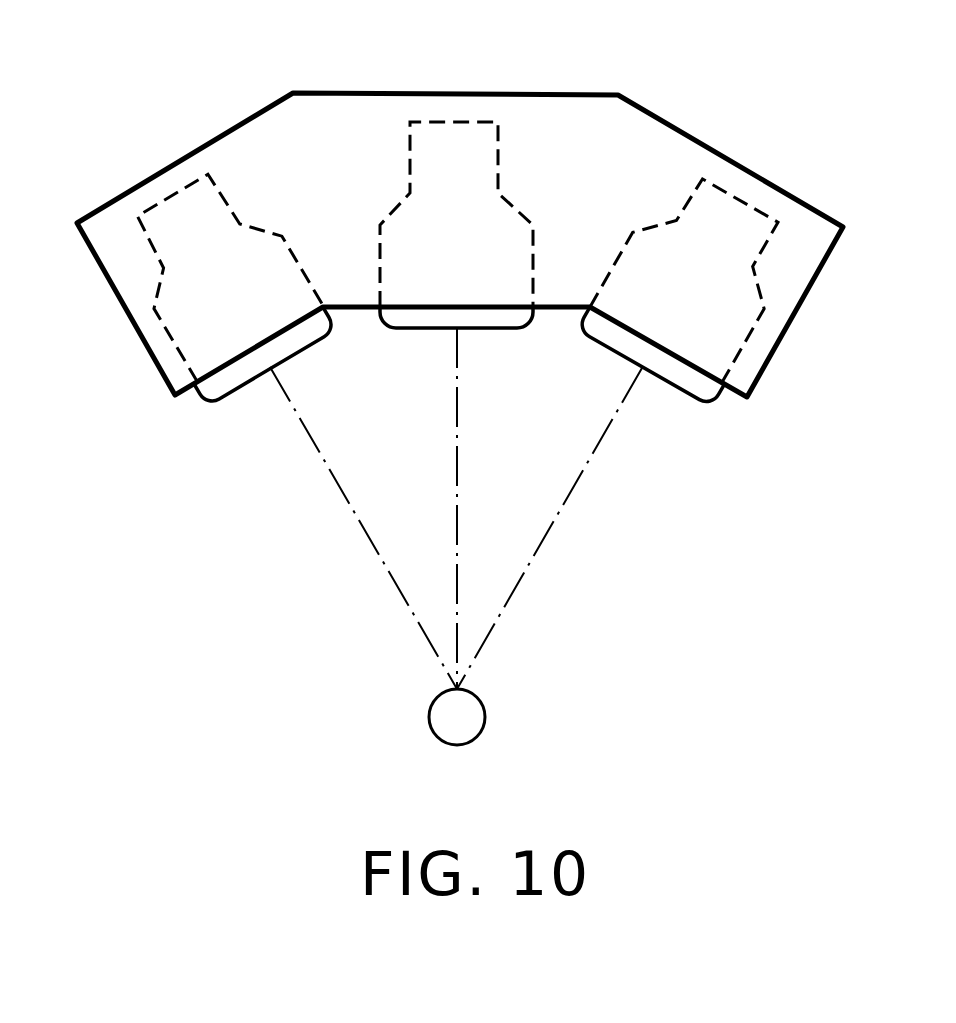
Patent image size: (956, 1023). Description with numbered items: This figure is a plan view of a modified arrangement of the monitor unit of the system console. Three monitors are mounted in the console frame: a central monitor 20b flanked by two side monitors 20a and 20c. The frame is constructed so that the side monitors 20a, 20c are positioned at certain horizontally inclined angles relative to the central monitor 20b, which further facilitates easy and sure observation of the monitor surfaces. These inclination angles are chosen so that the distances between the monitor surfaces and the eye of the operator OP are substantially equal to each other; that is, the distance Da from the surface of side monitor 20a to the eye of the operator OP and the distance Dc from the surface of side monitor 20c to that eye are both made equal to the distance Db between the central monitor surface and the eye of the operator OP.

The side monitor 20a is at (167, 193).
The central monitor 20b is at (470, 125).
The side monitor 20c is at (760, 207).
The distance Da is at (363, 528).
The distance Db is at (484, 508).
The distance Dc is at (549, 528).
The operator OP is at (457, 739).